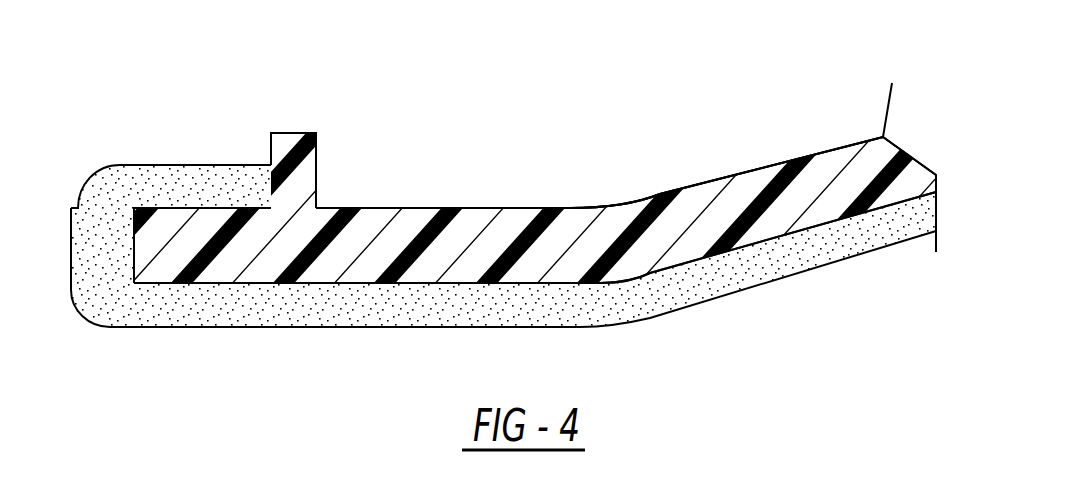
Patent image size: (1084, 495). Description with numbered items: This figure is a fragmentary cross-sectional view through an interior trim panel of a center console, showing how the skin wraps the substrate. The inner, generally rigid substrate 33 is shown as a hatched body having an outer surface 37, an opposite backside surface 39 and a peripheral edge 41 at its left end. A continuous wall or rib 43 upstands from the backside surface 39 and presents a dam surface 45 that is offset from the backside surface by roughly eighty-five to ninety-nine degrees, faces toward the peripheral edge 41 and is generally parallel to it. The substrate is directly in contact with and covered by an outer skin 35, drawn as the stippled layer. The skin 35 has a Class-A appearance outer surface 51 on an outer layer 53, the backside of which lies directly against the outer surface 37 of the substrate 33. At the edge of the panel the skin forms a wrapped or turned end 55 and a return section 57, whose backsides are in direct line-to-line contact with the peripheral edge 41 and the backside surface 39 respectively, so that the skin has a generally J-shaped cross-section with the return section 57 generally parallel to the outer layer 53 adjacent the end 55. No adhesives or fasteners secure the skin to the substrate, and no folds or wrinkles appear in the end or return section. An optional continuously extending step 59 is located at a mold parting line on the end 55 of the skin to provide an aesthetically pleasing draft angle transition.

The step 59 is at (70, 157).
The return section 57 is at (198, 188).
The wrapped or turned end 55 is at (102, 273).
The outer layer 53 is at (260, 308).
The Class-A appearance outer surface 51 is at (165, 327).
The peripheral edges 41 is at (134, 245).
The backside surface 39 is at (492, 207).
The continuous wall or rib 43 is at (295, 143).
The dam surface 45 is at (270, 147).
The substrate 33 is at (708, 190).
The outer surface 37 is at (455, 283).
The outer skin 35 is at (757, 267).